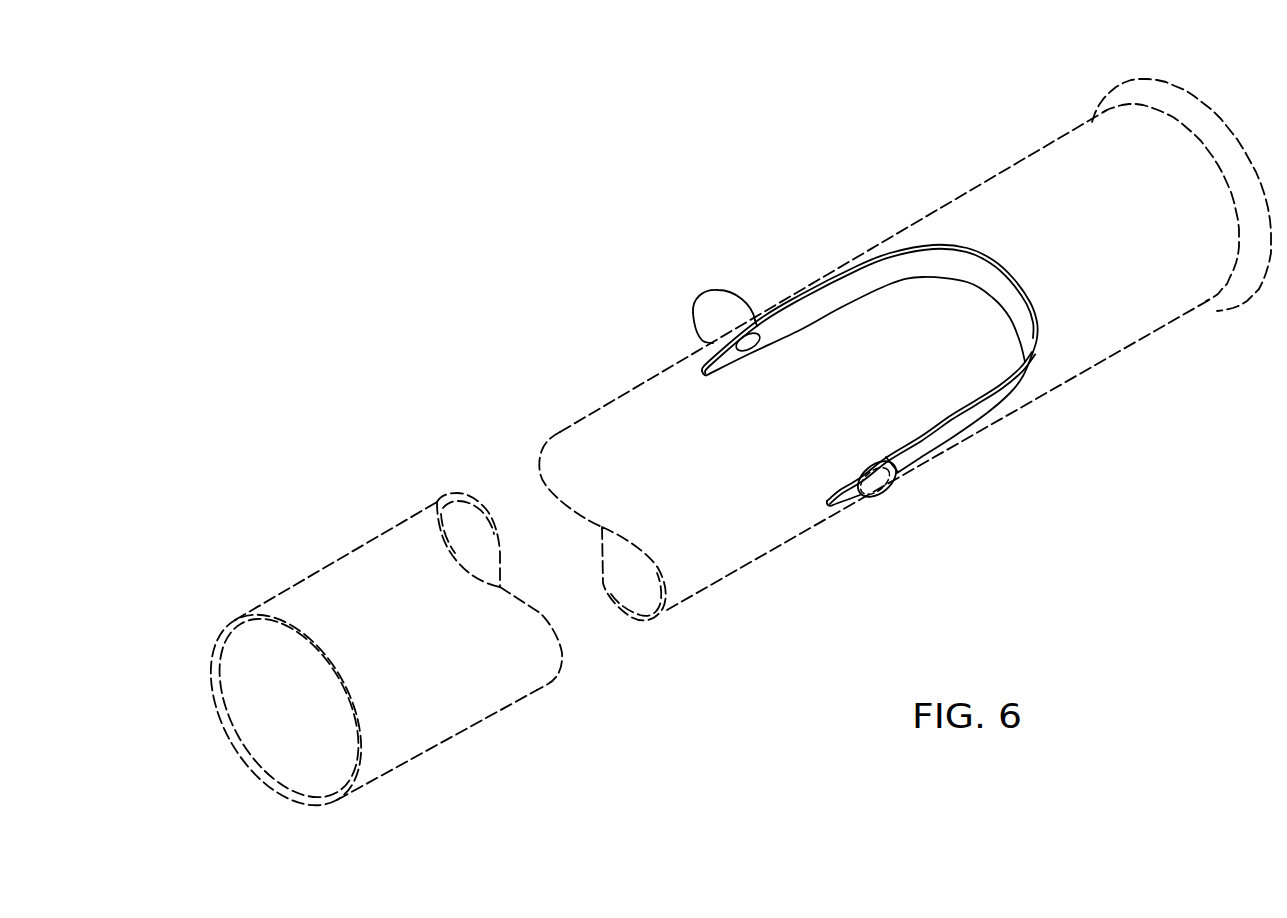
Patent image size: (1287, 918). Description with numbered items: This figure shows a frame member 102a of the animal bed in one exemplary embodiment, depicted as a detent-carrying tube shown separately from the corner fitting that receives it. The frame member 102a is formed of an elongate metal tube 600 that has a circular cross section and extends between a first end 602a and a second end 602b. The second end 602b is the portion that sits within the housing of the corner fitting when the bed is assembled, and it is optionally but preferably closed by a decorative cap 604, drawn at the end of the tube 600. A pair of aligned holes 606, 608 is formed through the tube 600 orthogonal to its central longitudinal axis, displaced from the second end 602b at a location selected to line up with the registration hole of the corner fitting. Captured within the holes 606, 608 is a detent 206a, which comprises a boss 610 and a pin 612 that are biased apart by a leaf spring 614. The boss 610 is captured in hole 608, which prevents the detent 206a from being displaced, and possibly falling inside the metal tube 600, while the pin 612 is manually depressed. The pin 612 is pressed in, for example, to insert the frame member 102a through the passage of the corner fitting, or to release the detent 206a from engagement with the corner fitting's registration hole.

The frame member 102a is at (371, 640).
The detent 206a is at (652, 291).
The elongate metal tube 600 is at (905, 359).
The first end 602a is at (277, 783).
The second end 602b is at (1185, 130).
The decorative cap 604 is at (1230, 309).
The hole 606 is at (692, 343).
The hole 608 is at (875, 531).
The boss 610 is at (889, 492).
The pin 612 is at (713, 290).
The leaf spring 614 is at (887, 372).